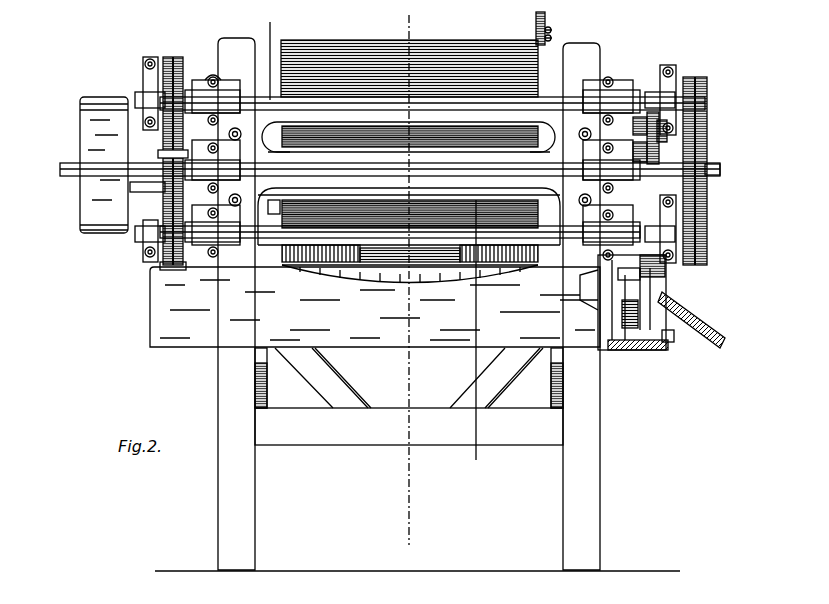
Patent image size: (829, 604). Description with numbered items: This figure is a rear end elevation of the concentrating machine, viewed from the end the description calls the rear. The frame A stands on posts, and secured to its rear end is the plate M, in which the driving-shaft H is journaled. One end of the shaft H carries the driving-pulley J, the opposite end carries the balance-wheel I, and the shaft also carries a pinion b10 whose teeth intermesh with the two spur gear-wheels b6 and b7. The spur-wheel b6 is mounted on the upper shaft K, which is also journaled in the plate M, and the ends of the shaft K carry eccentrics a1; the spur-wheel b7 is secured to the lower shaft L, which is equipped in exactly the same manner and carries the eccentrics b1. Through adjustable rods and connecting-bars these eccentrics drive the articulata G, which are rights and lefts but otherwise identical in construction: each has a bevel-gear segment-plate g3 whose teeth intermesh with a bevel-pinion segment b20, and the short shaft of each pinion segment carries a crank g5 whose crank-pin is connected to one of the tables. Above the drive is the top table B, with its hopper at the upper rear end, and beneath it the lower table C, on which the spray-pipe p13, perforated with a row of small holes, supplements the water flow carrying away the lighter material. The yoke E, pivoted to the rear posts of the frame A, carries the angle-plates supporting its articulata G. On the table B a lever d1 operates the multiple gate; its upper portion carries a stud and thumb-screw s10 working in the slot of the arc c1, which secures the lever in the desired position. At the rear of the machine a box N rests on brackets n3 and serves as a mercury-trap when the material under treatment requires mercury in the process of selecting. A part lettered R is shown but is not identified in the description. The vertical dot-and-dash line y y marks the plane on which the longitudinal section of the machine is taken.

The frame A is at (417, 304).
The box N is at (375, 307).
The section line y is at (401, 279).
The top table B is at (409, 58).
The upper shaft K is at (112, 78).
The plate M is at (408, 160).
The driving-shaft H is at (735, 170).
The driving-pulley J is at (104, 165).
The spur gear-wheel b6 is at (178, 58).
The balance-wheel I is at (707, 207).
The eccentrics a1 is at (150, 59).
The pinion b10 is at (130, 186).
The cranks g5 is at (700, 278).
The shaft L is at (135, 236).
The eccentrics b1 is at (140, 252).
The spur gear-wheel b7 is at (160, 267).
The roller carriage R is at (262, 270).
The lower table C is at (305, 252).
The spray-pipe p13 is at (473, 341).
The articulata G is at (665, 148).
The bevel-pinion segments b20 is at (675, 128).
The yoke E is at (640, 347).
The bevel-gear segment-plates g3 is at (665, 290).
The brackets n3 is at (268, 380).
The lever d1 is at (535, 28).
The arc c1 is at (558, 20).
The stud and thumb-screw s10 is at (553, 34).